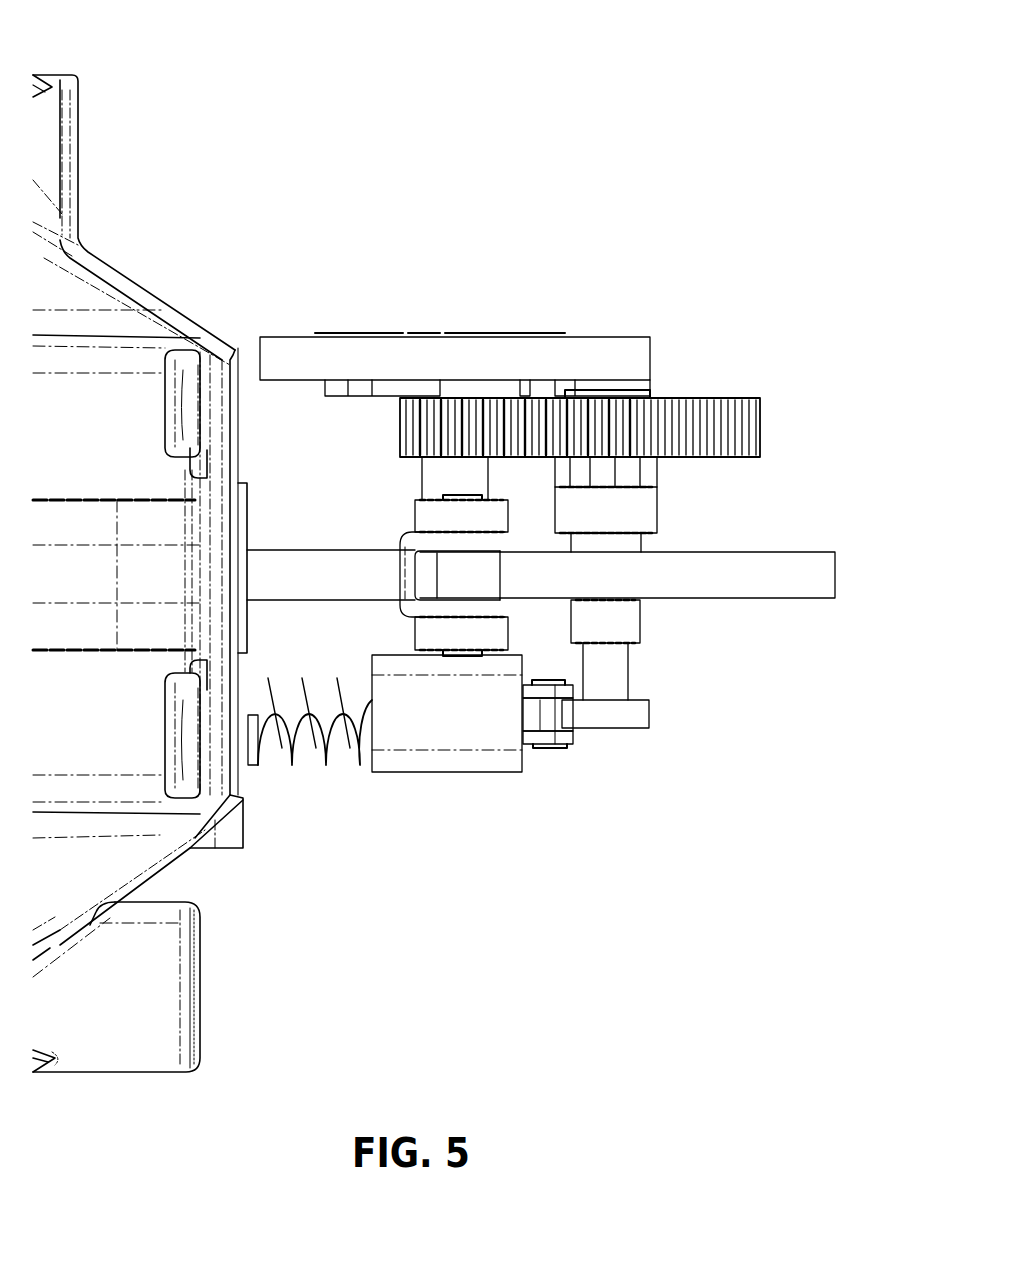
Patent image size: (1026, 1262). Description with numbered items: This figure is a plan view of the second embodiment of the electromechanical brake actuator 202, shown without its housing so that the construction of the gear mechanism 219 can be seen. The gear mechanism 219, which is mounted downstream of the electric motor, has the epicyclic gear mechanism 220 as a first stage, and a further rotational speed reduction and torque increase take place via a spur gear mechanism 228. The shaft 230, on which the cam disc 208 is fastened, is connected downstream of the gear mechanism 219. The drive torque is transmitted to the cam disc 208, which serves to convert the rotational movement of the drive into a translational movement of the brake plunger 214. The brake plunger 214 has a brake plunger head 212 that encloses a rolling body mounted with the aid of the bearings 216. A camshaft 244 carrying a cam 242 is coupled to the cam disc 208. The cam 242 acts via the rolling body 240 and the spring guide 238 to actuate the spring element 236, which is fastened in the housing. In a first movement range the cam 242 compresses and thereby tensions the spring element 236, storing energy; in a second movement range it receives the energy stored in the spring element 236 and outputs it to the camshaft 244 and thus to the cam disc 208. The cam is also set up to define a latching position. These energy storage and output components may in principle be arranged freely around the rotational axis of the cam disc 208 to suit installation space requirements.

The electromechanical brake actuator 202 is at (630, 136).
The cam disc 208 is at (830, 588).
The brake plunger head 212 is at (402, 548).
The brake plunger 214 is at (248, 575).
The bearings 216 is at (467, 510).
The gear mechanism 219 is at (578, 289).
The epicyclic gear mechanism 220 is at (418, 326).
The spur gear mechanism 228 is at (770, 430).
The shaft 230 is at (641, 517).
The spring element 236 is at (290, 765).
The spring guide 238 is at (478, 735).
The rolling body 240 is at (536, 722).
The cam 242 is at (614, 725).
The camshaft 244 is at (622, 686).